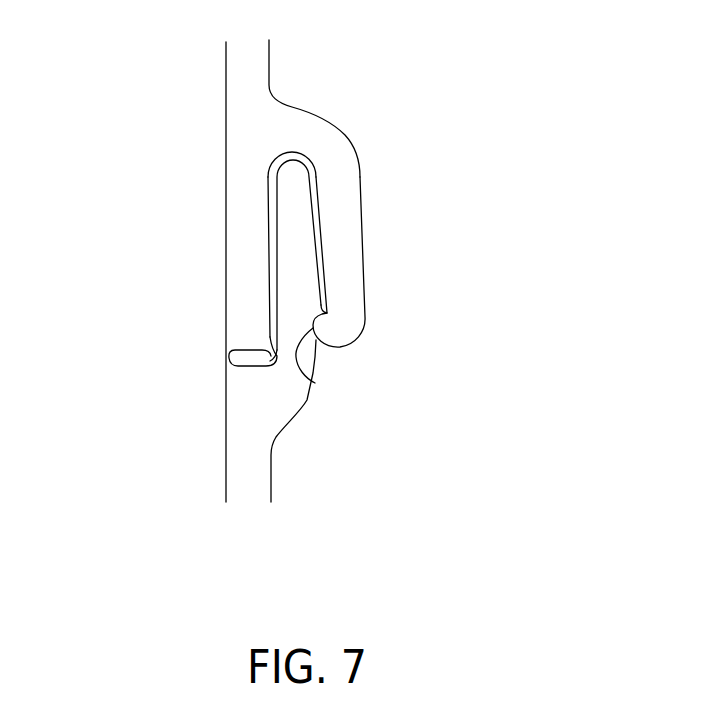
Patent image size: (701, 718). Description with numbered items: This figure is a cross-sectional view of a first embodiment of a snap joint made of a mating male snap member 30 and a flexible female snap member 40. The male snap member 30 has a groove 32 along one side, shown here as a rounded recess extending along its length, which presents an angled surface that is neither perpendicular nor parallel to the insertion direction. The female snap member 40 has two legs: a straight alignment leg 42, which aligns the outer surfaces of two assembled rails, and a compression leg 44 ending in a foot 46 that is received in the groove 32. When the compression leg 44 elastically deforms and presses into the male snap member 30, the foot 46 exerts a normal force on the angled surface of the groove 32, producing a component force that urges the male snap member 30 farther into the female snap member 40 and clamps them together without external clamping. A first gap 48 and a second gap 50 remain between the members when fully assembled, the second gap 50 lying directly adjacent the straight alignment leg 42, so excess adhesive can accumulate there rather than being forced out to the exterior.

The male snap member 30 is at (268, 392).
The groove 32 is at (307, 377).
The female snap member 40 is at (249, 113).
The straight alignment leg 42 is at (247, 266).
The compression leg 44 is at (340, 237).
The foot 46 is at (320, 328).
The first gap 48 is at (300, 151).
The second gap 50 is at (228, 351).